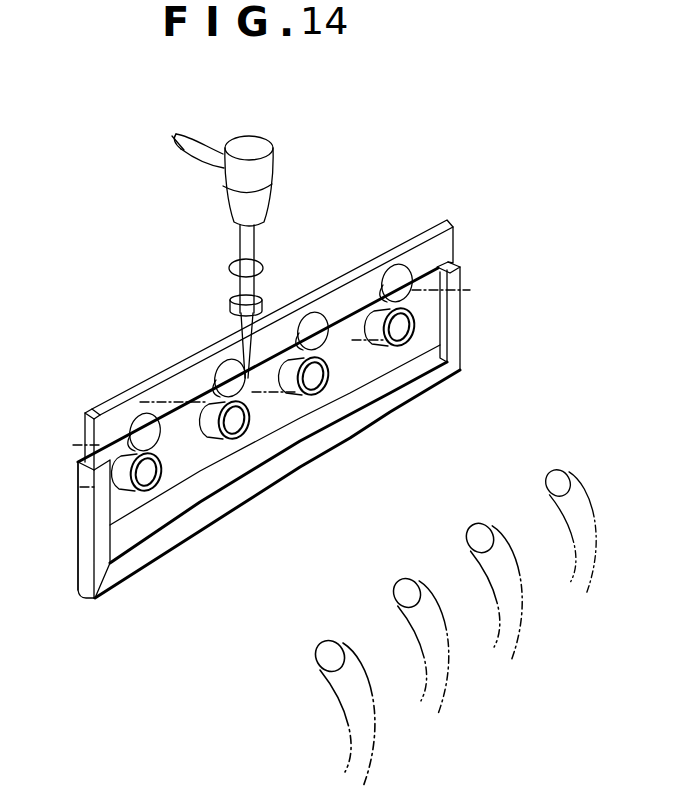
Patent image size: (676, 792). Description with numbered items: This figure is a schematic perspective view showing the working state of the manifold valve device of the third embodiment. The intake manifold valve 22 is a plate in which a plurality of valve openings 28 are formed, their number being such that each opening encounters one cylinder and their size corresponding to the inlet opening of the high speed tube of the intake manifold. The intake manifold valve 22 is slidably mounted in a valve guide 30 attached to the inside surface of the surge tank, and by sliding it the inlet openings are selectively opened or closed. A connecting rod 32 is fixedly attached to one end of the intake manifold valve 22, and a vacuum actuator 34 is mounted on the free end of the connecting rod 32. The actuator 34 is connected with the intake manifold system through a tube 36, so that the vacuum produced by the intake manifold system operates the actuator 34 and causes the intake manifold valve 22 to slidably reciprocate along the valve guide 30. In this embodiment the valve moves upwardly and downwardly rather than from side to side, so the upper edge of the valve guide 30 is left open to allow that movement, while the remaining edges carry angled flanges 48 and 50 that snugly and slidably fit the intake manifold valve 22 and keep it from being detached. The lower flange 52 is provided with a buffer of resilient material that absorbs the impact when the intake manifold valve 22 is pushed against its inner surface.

The intake manifold valve 22 is at (425, 340).
The valve openings 28 is at (131, 488).
The valve guide 30 is at (277, 488).
The connecting rod 32 is at (248, 252).
The vacuum actuator 34 is at (268, 172).
The tube 36 is at (199, 154).
The angled flange 48 is at (195, 523).
The angled flange 50 is at (84, 560).
The lower flange 52 is at (128, 547).